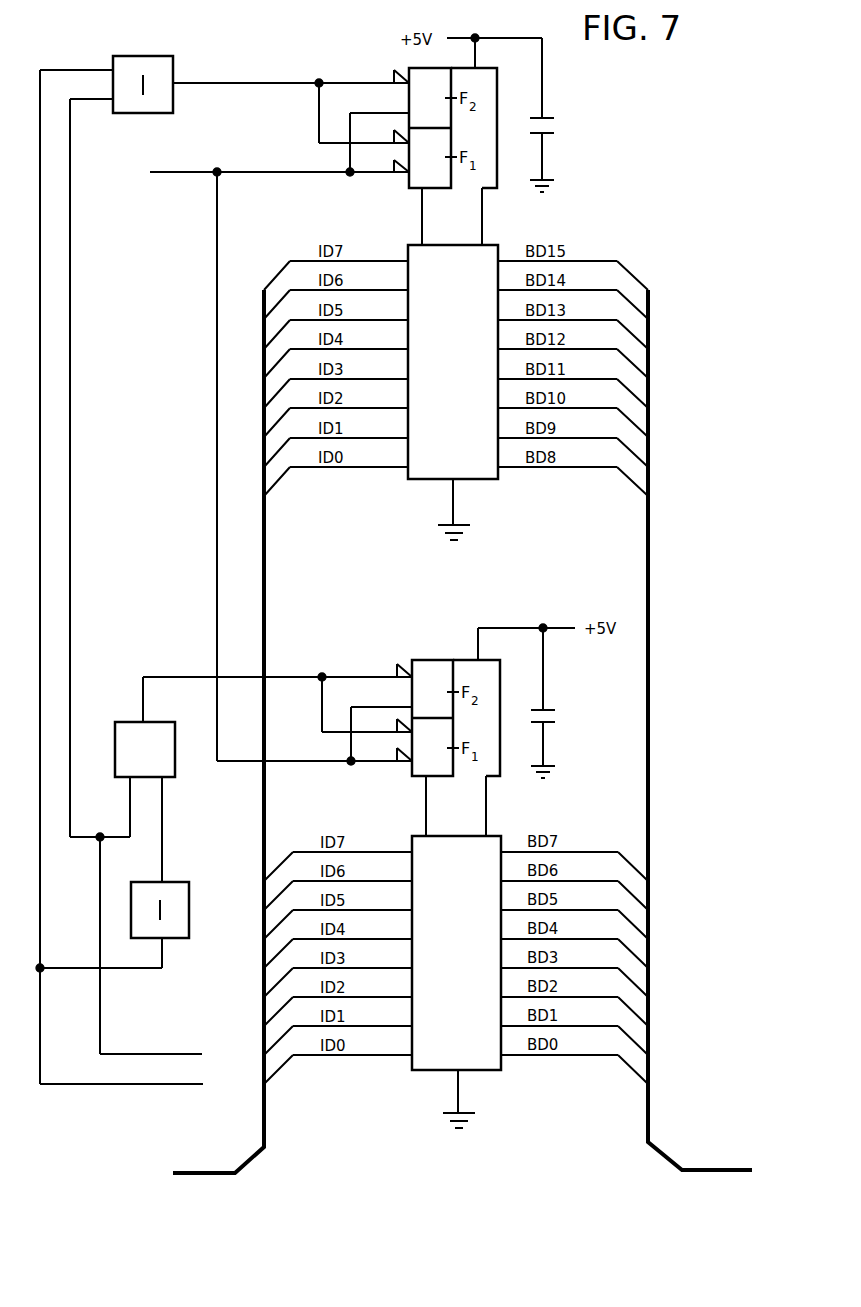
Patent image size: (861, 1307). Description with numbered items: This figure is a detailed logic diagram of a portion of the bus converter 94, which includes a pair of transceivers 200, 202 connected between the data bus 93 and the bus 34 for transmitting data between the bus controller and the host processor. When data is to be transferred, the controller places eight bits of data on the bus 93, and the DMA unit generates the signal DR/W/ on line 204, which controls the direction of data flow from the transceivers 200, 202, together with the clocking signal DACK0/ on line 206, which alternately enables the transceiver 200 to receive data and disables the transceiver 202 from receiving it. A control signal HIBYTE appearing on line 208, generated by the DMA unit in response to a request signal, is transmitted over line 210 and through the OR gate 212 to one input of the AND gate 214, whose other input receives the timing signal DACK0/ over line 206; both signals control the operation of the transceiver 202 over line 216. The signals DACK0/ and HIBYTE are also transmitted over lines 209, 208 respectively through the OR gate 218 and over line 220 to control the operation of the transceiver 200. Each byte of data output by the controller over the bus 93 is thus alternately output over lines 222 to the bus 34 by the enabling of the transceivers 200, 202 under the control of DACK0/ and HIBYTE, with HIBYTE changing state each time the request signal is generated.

The OR gate 218 is at (141, 56).
The line 220 is at (264, 85).
The line 204 is at (204, 177).
The bus converter 94 is at (608, 177).
The lines 222 is at (631, 272).
The transceiver 200 is at (491, 480).
The line 209 is at (72, 658).
The line 216 is at (292, 677).
The AND gate 214 is at (173, 779).
The OR gate 212 is at (173, 882).
The line 210 is at (163, 957).
The line 206 is at (104, 1009).
The line 208 is at (75, 1085).
The transceiver 202 is at (494, 1071).
The data bus 93 is at (265, 1150).
The bus 34 is at (688, 1170).